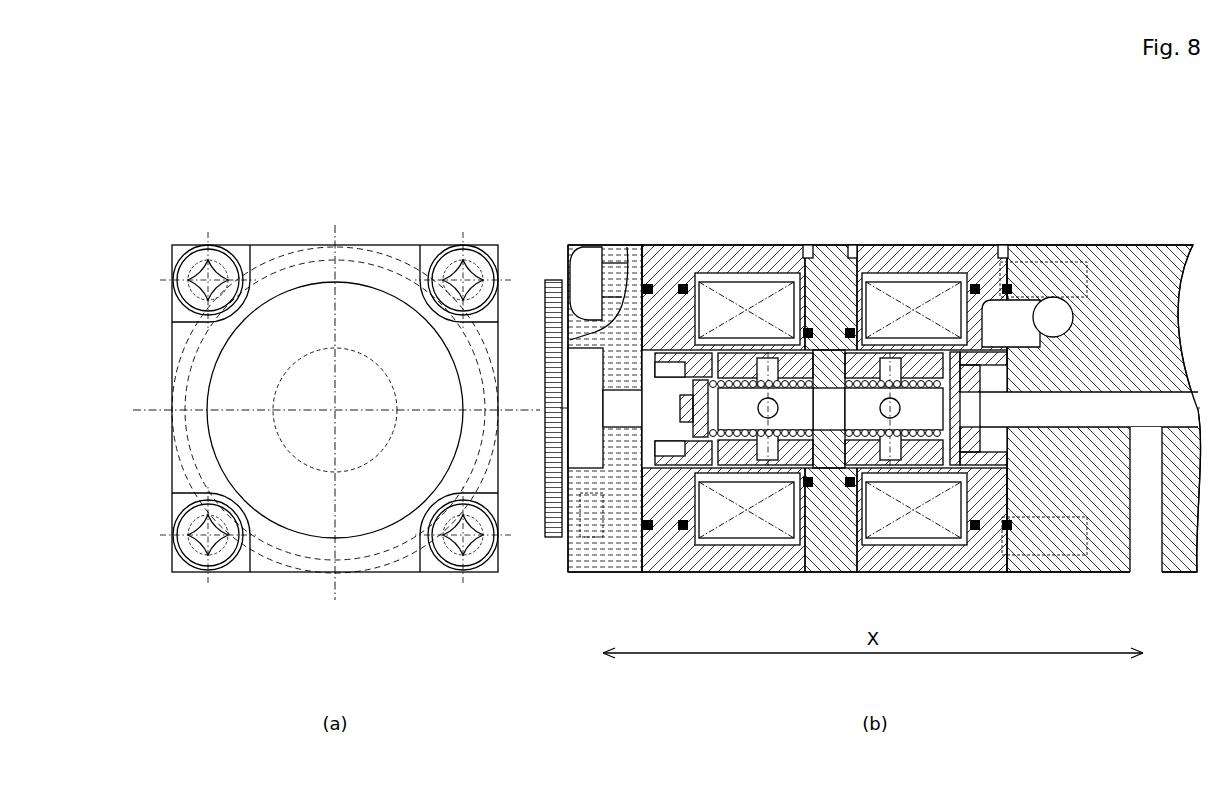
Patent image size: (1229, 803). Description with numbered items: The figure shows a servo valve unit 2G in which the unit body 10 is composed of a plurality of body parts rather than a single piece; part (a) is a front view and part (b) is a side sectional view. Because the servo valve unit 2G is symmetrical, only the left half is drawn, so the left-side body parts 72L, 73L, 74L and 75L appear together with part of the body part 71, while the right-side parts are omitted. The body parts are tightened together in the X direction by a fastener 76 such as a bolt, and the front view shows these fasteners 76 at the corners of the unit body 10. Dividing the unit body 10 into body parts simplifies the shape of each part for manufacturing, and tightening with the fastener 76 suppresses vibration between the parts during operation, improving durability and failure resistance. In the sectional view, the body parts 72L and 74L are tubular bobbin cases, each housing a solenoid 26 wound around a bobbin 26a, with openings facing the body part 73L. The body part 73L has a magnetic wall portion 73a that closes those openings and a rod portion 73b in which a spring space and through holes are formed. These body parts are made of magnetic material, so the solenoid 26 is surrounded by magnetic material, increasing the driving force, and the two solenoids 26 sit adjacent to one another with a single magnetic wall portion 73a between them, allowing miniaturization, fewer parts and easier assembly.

The servo valve unit 2G is at (366, 67).
The unit body 10 is at (369, 198).
The fastener 76 is at (233, 247).
The body part 75L is at (636, 244).
The body part 74L is at (737, 244).
The body part 73L is at (839, 244).
The body part 72L is at (930, 244).
The body part 71 is at (1118, 244).
The solenoid 26 is at (745, 522).
The bobbin 26a is at (775, 474).
The magnetic wall portion 73a is at (825, 545).
The rod portion 73b is at (722, 457).